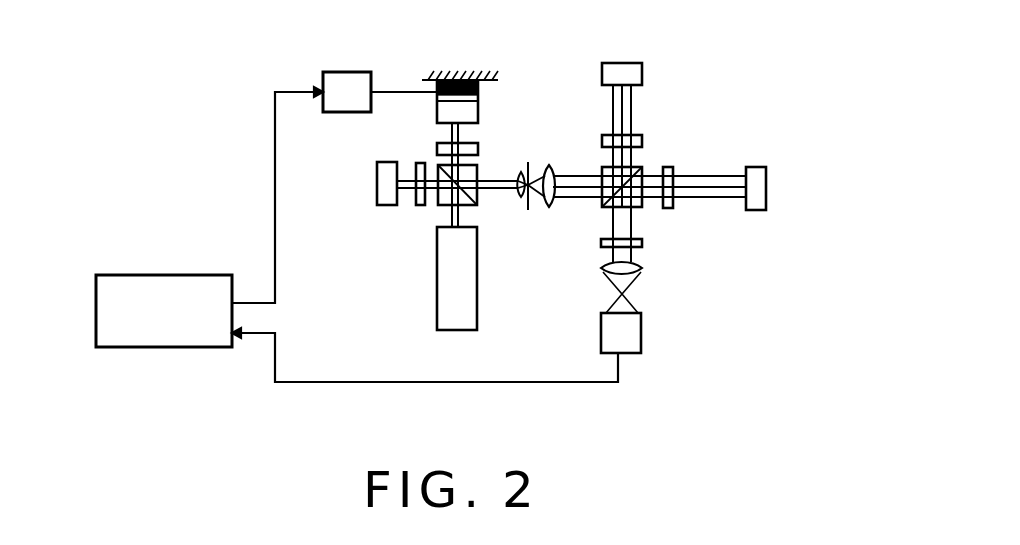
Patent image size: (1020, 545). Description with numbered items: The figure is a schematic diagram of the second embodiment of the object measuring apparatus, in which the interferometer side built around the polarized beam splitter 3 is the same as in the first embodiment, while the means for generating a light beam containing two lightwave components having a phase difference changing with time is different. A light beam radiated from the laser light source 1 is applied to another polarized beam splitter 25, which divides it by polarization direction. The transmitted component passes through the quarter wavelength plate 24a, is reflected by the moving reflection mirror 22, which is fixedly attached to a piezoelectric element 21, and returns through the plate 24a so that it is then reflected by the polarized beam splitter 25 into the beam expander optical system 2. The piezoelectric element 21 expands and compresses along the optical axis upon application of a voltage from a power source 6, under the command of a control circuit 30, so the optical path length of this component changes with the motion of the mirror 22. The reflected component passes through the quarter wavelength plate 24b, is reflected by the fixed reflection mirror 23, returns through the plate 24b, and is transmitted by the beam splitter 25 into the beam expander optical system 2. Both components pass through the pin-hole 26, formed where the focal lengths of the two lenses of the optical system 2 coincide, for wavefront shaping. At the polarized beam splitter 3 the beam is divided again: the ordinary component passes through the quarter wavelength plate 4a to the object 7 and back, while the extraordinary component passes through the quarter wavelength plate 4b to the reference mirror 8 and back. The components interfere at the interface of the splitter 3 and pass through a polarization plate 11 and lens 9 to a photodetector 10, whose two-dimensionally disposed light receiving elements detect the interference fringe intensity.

The laser light source 1 is at (443, 293).
The beam expander optical system 2 is at (536, 186).
The polarized beam splitter 3 is at (605, 207).
The quarter wavelength plate 4a is at (643, 141).
The quarter wavelength plate 4b is at (670, 167).
The power source 6 is at (347, 80).
The object 7 is at (768, 168).
The reference mirror 8 is at (644, 62).
The lens 9 is at (641, 271).
The photodetector 10 is at (632, 333).
The polarization plate 11 is at (643, 243).
The piezoelectric element 21 is at (479, 87).
The reflection mirror 22 is at (437, 108).
The fixed reflection mirror 23 is at (378, 178).
The quarter wavelength plate 24a is at (479, 150).
The quarter wavelength plate 24b is at (413, 207).
The polarized beam splitter 25 is at (468, 208).
The pin-hole 26 is at (530, 163).
The control circuit 30 is at (177, 278).